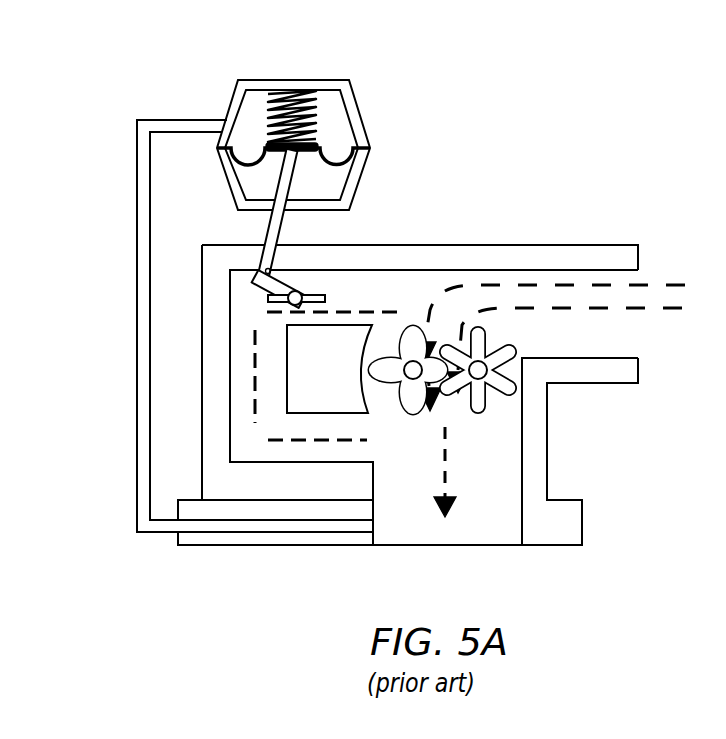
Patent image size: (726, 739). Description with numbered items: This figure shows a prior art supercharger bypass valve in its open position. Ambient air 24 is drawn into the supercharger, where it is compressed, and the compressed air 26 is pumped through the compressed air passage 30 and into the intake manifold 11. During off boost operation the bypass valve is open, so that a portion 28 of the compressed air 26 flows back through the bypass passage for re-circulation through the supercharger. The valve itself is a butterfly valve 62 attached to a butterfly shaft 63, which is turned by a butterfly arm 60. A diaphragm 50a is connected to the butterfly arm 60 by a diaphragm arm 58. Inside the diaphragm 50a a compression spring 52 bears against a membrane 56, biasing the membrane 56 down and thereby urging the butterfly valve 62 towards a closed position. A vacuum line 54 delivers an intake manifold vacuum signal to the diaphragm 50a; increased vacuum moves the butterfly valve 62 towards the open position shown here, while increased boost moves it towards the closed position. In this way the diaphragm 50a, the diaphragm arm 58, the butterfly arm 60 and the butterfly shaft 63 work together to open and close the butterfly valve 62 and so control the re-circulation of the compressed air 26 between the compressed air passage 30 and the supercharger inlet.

The intake manifold 11 is at (568, 532).
The ambient air 24 is at (637, 283).
The compressed air 26 is at (452, 433).
The portion of compressed air 28 is at (257, 368).
The compressed air passage 30 is at (478, 496).
The diaphragm 50a is at (233, 103).
The compression spring 52 is at (300, 92).
The vacuum line 54 is at (167, 122).
The membrane 56 is at (333, 157).
The diaphragm arm 58 is at (275, 230).
The butterfly arm 60 is at (285, 288).
The butterfly valve 62 is at (324, 295).
The butterfly shaft 63 is at (298, 292).